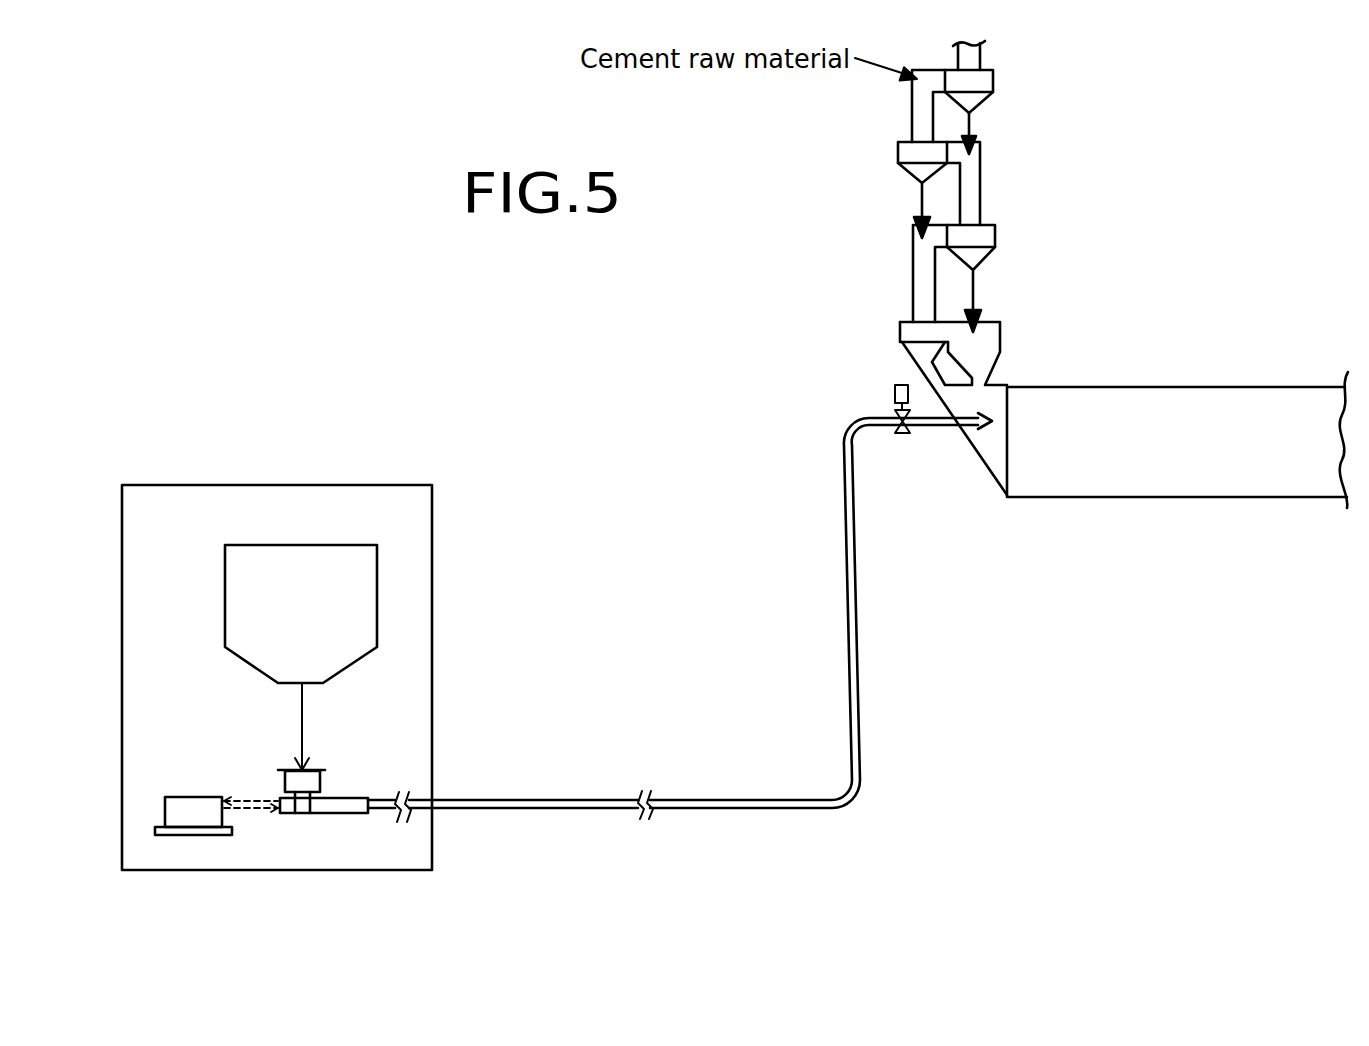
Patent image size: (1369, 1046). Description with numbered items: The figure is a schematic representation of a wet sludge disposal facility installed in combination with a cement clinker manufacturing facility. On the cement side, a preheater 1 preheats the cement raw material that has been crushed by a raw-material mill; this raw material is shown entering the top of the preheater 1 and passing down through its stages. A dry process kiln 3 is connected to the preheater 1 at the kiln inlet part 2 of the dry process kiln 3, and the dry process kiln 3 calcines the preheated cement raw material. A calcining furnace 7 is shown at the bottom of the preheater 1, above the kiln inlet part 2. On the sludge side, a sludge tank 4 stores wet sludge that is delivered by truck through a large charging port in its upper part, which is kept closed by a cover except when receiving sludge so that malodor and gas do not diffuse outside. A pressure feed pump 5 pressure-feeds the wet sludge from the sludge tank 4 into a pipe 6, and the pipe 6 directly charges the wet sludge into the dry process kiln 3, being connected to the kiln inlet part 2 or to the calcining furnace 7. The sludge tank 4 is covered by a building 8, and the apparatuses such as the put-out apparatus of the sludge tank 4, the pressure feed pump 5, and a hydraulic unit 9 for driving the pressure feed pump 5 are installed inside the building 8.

The preheater 1 is at (886, 196).
The kiln inlet part 2 is at (992, 442).
The dry process kiln 3 is at (1145, 478).
The sludge tank 4 is at (240, 588).
The pressure feed pump 5 is at (335, 807).
The pipe 6 is at (715, 800).
The calcining furnace 7 is at (1002, 333).
The building 8 is at (432, 546).
The hydraulic unit 9 is at (187, 808).